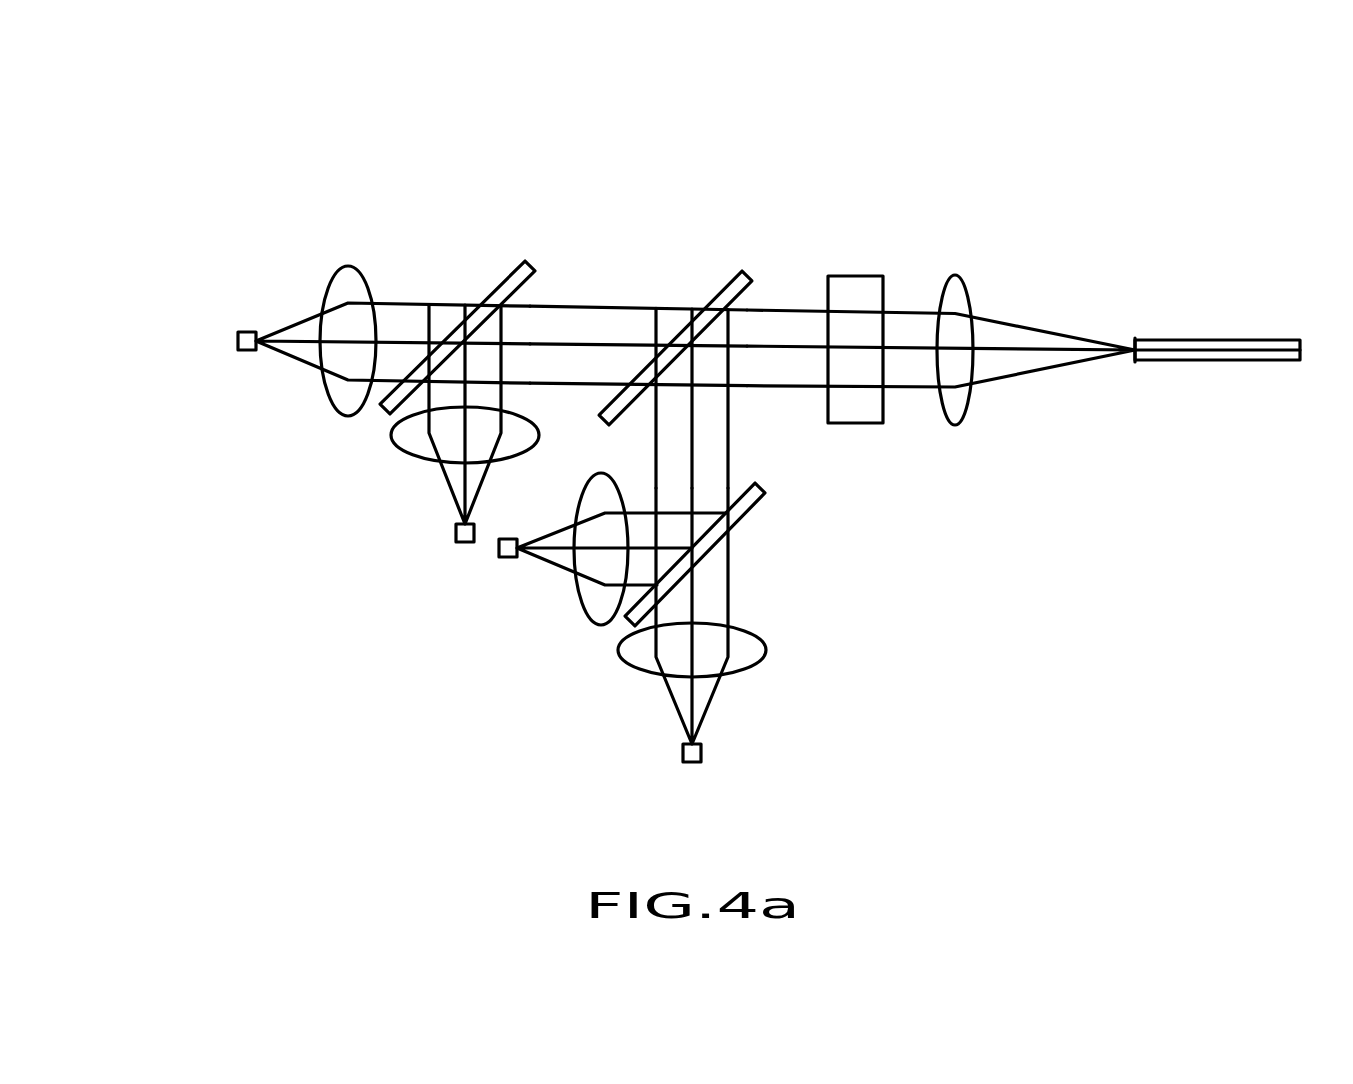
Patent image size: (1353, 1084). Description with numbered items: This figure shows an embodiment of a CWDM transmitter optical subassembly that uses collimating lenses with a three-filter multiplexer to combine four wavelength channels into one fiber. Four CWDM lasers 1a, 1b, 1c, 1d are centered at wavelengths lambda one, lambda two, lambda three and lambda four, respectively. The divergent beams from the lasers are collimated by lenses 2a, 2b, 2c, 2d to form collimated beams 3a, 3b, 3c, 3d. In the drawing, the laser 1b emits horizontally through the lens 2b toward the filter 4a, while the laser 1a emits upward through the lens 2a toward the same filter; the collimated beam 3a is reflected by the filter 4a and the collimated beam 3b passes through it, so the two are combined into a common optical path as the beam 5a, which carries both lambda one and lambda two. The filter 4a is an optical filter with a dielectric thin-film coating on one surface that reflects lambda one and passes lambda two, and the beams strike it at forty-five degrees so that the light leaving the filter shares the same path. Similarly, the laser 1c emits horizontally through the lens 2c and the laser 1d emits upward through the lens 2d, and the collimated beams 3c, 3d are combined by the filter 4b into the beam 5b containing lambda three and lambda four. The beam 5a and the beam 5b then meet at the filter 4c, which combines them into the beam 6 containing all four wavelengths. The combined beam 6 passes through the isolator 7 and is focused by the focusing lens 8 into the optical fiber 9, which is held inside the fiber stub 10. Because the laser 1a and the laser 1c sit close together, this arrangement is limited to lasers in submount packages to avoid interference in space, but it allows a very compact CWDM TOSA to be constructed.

The CWDM laser 1a is at (456, 539).
The CWDM laser 1b is at (237, 347).
The CWDM laser 1c is at (500, 556).
The CWDM laser 1d is at (702, 752).
The collimating lens 2a is at (412, 458).
The collimating lens 2b is at (329, 283).
The collimating lens 2c is at (577, 590).
The collimating lens 2d is at (760, 660).
The collimated beam 3a is at (410, 409).
The collimated beam 3b is at (415, 306).
The collimated beam 3c is at (628, 620).
The collimated beam 3d is at (730, 600).
The filter 4a is at (498, 289).
The filter 4b is at (748, 515).
The filter 4c is at (722, 283).
The beam 5a is at (610, 306).
The beam 5b is at (728, 440).
The combined beam 6 is at (787, 310).
The isolator 7 is at (847, 275).
The focusing lens 8 is at (955, 290).
The optical fiber 9 is at (1140, 338).
The fiber stub 10 is at (1227, 340).